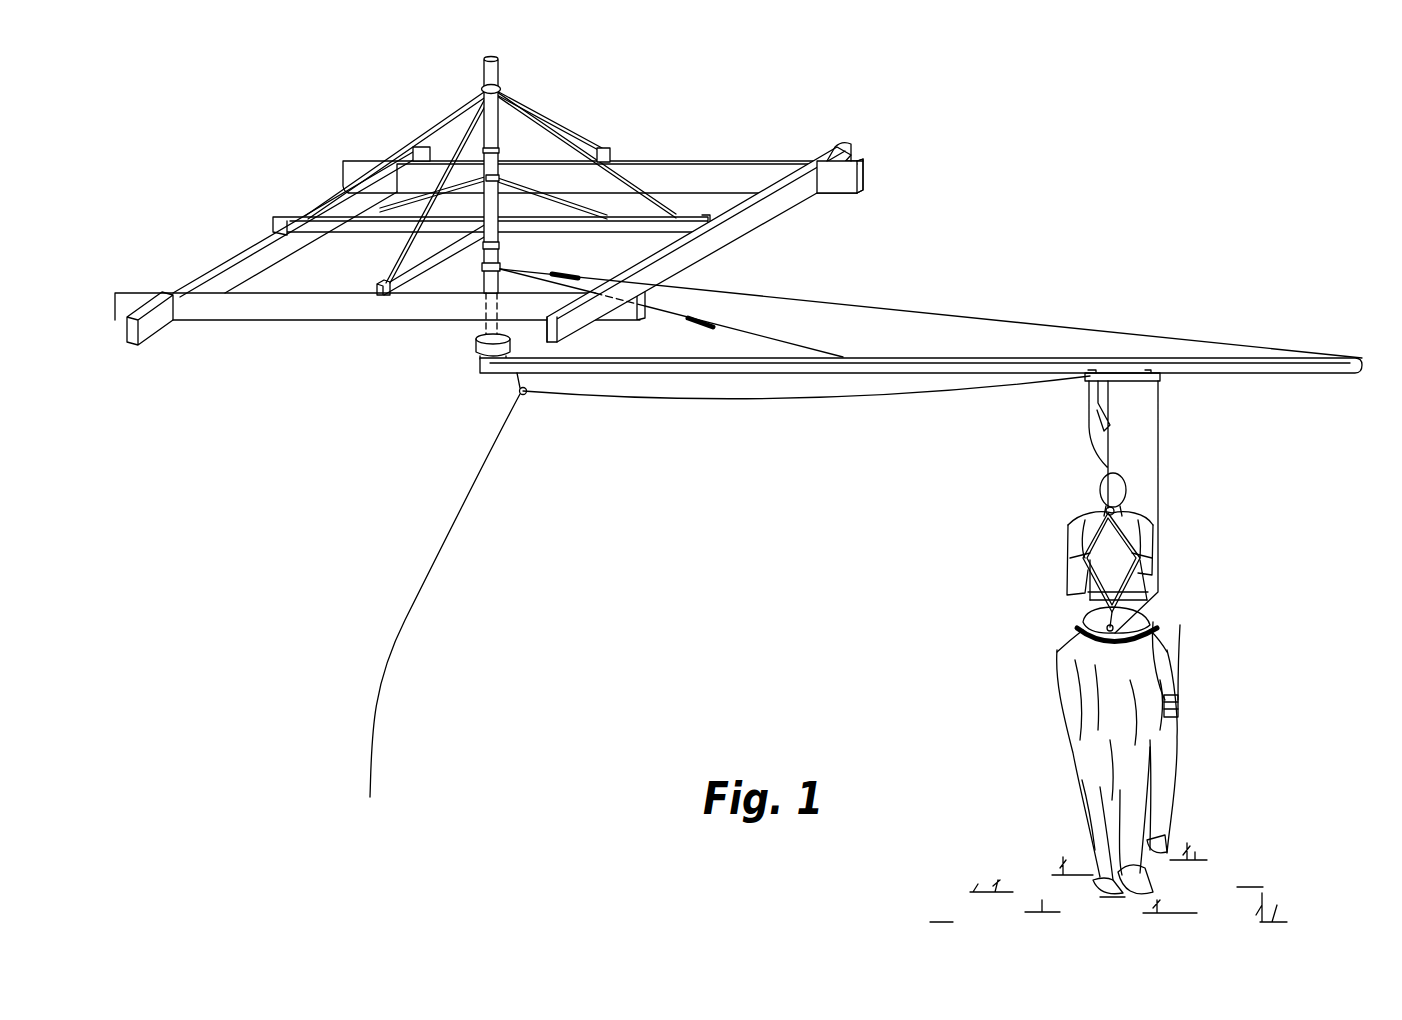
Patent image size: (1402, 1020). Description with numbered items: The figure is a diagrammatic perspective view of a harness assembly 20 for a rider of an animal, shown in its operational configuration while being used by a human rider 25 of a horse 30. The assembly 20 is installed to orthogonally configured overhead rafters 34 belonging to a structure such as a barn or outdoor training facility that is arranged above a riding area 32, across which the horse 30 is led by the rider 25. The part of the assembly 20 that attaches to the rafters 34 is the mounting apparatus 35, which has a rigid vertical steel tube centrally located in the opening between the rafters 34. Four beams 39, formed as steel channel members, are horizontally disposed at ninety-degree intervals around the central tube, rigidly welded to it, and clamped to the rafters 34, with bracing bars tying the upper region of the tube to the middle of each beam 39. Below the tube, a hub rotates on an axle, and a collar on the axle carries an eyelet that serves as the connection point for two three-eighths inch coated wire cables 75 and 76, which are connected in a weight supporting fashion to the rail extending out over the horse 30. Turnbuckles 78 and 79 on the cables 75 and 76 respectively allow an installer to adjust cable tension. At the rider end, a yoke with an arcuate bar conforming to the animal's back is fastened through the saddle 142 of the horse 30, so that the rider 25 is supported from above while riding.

The harness assembly 20 is at (873, 260).
The rider 25 is at (1068, 505).
The horse 30 is at (1185, 626).
The riding area 32 is at (1208, 905).
The overhead rafters 34 is at (243, 243).
The mounting apparatus 35 is at (556, 93).
The beams 39 is at (689, 226).
The wire cable 75 is at (762, 292).
The wire cable 76 is at (680, 320).
The turnbuckle 78 is at (582, 277).
The turnbuckle 79 is at (715, 325).
The saddle 142 is at (1070, 646).